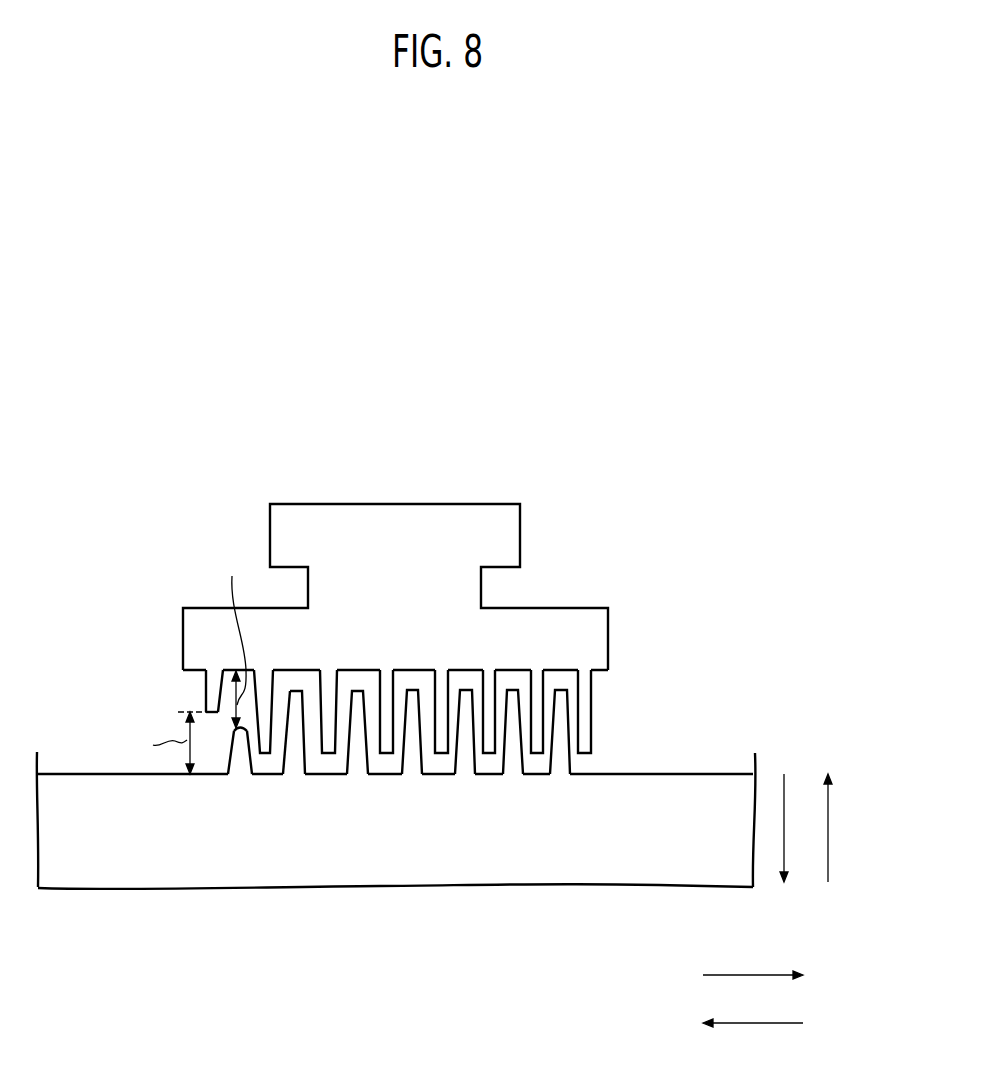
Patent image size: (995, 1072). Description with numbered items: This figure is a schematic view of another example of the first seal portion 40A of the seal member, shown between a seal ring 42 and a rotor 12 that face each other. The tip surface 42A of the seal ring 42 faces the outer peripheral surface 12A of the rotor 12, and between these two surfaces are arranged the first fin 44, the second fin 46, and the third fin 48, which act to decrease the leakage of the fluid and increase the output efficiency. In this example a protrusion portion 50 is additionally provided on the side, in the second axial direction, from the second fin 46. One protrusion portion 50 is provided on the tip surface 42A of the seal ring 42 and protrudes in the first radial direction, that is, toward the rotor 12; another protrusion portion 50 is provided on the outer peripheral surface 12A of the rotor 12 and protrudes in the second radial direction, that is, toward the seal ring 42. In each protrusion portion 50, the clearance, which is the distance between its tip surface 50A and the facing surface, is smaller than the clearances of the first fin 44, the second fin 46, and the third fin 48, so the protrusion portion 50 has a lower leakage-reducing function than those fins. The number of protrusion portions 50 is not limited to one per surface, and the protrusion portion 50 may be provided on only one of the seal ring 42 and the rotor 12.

The first seal portion 40A is at (668, 457).
The seal ring 42 is at (436, 598).
The tip surface 42A is at (592, 672).
The first fin 44 is at (601, 731).
The second fin 46 is at (277, 736).
The third fin 48 is at (416, 845).
The protrusion portion 50 is at (183, 828).
The tip surface 50A is at (214, 713).
The rotor 12 is at (396, 845).
The outer peripheral surface 12A is at (712, 774).